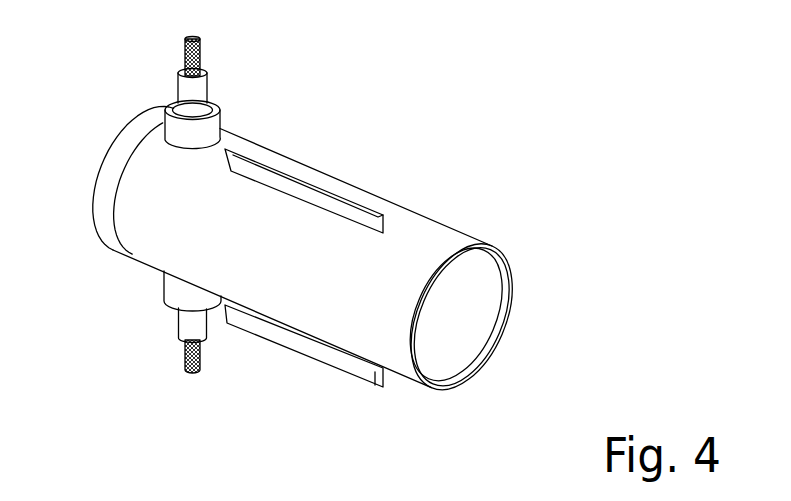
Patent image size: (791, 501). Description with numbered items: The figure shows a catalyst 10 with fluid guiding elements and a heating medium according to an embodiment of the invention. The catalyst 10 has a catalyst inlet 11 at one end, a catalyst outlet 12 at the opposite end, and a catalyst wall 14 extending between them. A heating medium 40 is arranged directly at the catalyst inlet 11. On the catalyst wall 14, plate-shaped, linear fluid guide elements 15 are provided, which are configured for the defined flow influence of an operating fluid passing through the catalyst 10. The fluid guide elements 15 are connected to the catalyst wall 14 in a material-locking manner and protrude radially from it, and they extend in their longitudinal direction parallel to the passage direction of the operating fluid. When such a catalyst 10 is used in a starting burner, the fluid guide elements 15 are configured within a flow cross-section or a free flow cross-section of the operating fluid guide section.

The catalyst 10 is at (381, 87).
The catalyst inlet 11 is at (125, 205).
The catalyst outlet 12 is at (465, 324).
The catalyst wall 14 is at (417, 247).
The fluid guide elements 15 is at (302, 177).
The heating medium 40 is at (128, 143).